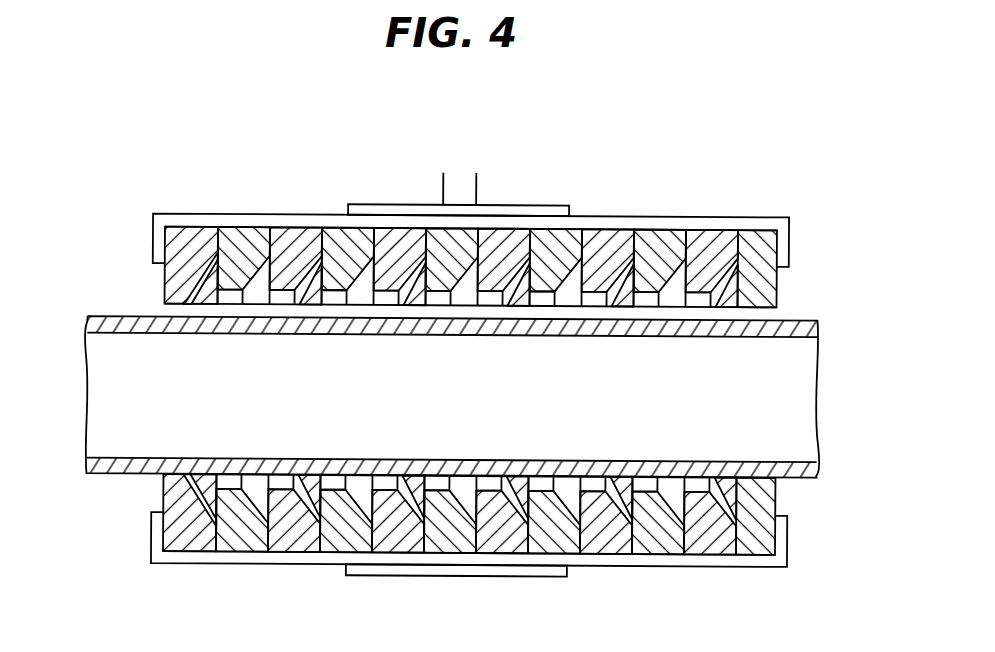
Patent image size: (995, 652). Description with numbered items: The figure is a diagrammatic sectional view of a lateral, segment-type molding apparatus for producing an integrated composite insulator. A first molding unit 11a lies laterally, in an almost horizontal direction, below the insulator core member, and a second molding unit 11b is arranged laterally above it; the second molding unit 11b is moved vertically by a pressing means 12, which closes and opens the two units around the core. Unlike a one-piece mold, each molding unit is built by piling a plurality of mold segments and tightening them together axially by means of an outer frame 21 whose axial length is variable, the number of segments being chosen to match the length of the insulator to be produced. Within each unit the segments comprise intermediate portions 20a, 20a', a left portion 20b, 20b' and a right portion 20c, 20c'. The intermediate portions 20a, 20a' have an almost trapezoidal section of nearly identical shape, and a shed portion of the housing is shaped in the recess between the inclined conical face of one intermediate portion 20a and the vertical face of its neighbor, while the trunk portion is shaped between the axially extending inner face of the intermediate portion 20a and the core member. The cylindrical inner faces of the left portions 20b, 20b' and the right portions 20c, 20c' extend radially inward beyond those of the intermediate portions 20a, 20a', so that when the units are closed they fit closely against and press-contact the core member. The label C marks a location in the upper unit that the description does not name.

The pressing means 12 is at (458, 160).
The cut gap C is at (689, 213).
The left portion 20b' is at (185, 227).
The intermediate portion 20a' is at (507, 229).
The right portion 20c' is at (805, 268).
The outer frame 21 is at (790, 232).
The second molding unit 11b is at (145, 287).
The first molding unit 11a is at (142, 500).
The left portion 20b is at (180, 545).
The intermediate portion 20a is at (476, 548).
The right portion 20c is at (770, 550).